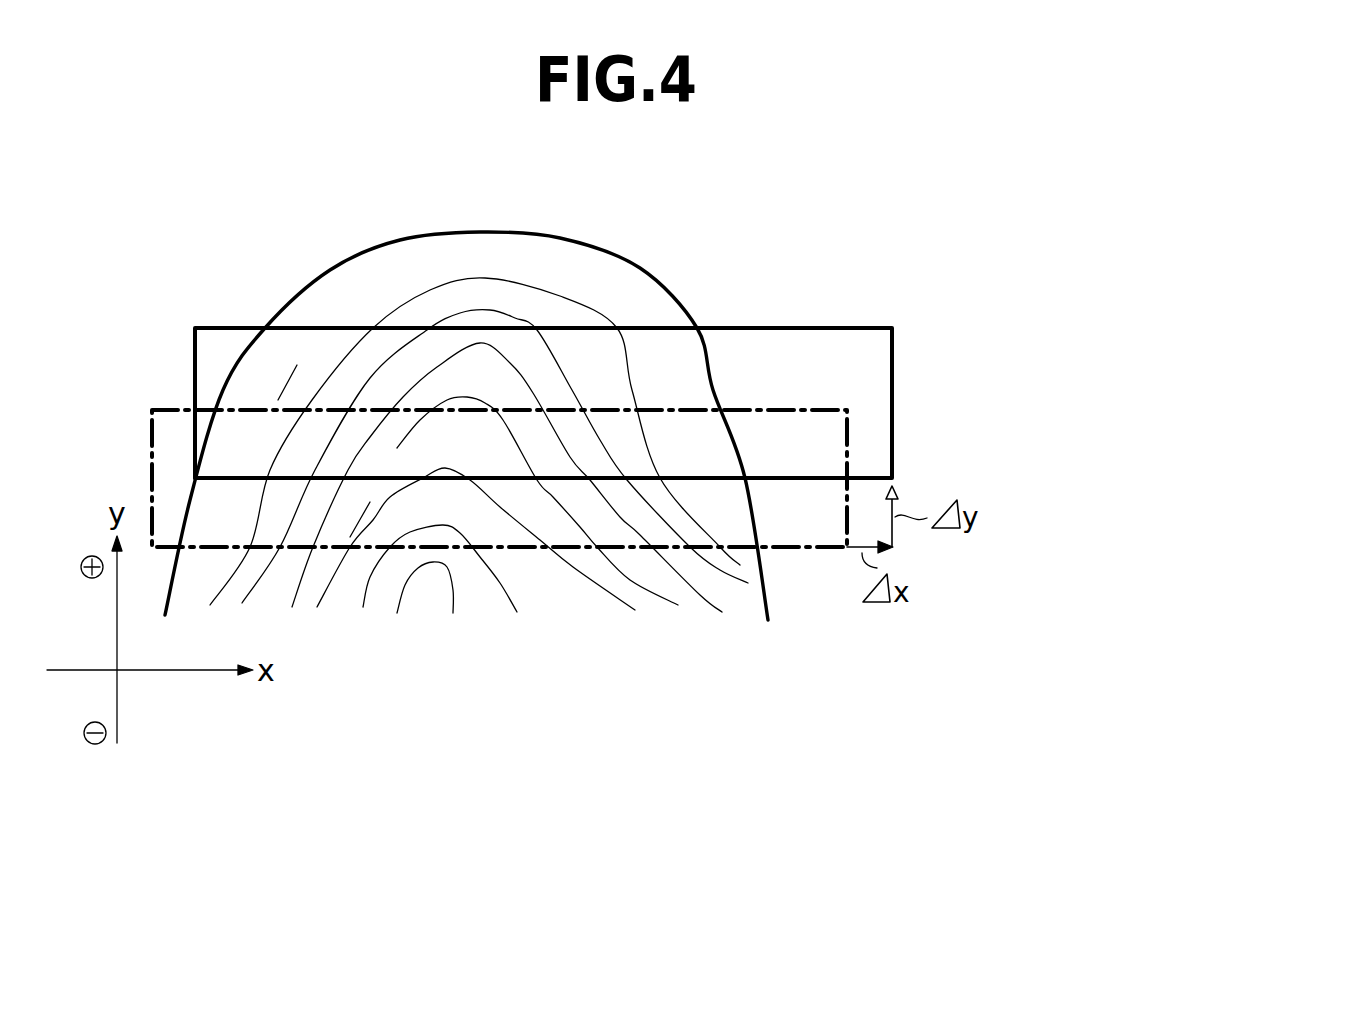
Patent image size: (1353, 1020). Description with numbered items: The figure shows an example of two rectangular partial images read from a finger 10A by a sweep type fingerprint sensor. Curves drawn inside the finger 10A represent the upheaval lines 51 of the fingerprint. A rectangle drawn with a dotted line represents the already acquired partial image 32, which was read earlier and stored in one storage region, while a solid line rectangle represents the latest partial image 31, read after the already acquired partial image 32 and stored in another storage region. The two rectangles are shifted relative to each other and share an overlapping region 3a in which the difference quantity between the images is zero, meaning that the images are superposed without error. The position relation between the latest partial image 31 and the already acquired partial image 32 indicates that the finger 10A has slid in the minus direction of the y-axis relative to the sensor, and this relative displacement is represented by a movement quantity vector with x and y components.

The finger 10A is at (323, 267).
The upheaval lines of the fingerprint 51 is at (553, 278).
The overlapping region 3a is at (747, 457).
The latest partial image 31 is at (810, 328).
The already acquired partial image 32 is at (800, 548).